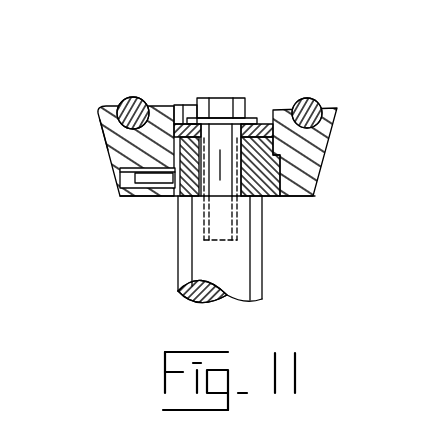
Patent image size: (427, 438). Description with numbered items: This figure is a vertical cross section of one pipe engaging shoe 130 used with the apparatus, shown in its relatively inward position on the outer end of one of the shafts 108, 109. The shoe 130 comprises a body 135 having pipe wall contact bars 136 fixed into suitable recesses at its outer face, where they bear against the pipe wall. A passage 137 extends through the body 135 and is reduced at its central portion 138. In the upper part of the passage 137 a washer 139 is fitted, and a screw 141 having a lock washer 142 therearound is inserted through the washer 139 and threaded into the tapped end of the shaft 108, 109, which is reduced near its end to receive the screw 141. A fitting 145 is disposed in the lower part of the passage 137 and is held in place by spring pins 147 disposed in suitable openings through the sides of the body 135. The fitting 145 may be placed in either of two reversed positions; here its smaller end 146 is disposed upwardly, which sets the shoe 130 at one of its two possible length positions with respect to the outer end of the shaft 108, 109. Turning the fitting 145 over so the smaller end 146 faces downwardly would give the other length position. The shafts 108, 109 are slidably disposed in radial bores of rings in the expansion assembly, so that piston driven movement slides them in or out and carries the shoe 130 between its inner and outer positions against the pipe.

The shaft 108 is at (262, 262).
The shaft 109 is at (290, 248).
The shoe 130 is at (100, 194).
The body 135 is at (331, 128).
The pipe wall contact bar 136 is at (132, 98).
The passage 137 is at (271, 109).
The reduced central portion 138 is at (318, 175).
The washer 139 is at (178, 105).
The screw 141 is at (222, 98).
The lock washer 142 is at (191, 105).
The fitting 145 is at (315, 194).
The smaller end 146 is at (103, 141).
The spring pin 147 is at (140, 197).